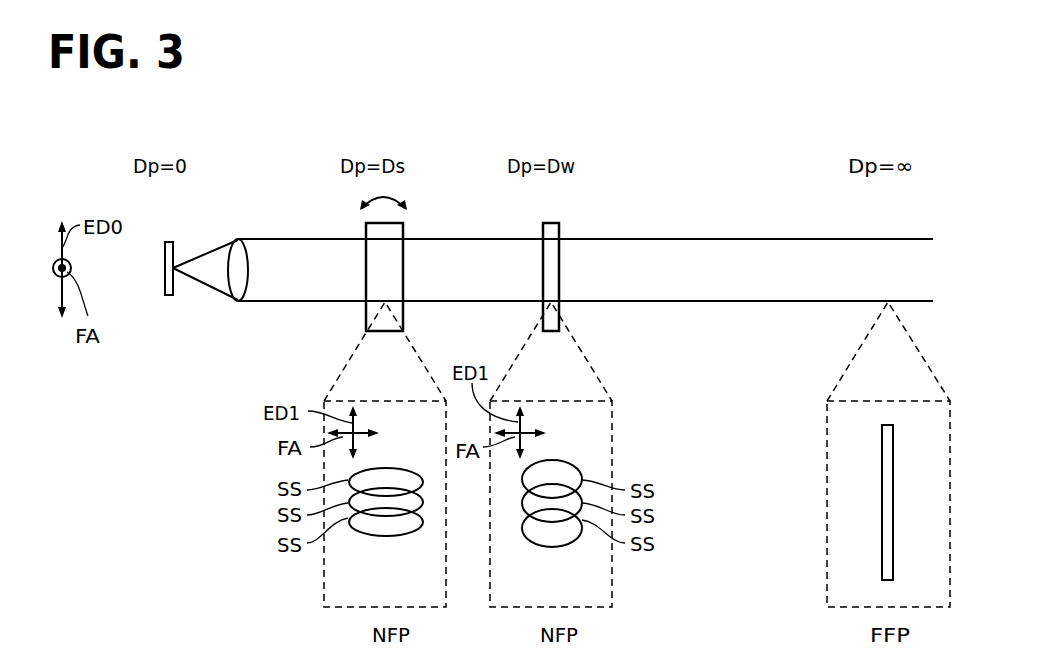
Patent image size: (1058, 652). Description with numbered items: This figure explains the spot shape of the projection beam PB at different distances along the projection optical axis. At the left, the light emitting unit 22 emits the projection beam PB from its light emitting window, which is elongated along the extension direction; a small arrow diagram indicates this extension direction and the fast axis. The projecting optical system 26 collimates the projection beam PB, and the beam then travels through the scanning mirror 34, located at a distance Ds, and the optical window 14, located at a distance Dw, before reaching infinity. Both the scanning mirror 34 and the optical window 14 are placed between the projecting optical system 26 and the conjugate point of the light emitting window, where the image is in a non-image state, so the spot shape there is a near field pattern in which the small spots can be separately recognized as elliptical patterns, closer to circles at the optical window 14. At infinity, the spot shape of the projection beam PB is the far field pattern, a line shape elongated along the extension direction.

The light emitting unit 22 is at (168, 297).
The projecting optical system 26 is at (238, 302).
The scanning mirror 34 is at (403, 232).
The optical window 14 is at (559, 232).
The projection beam PB is at (698, 238).